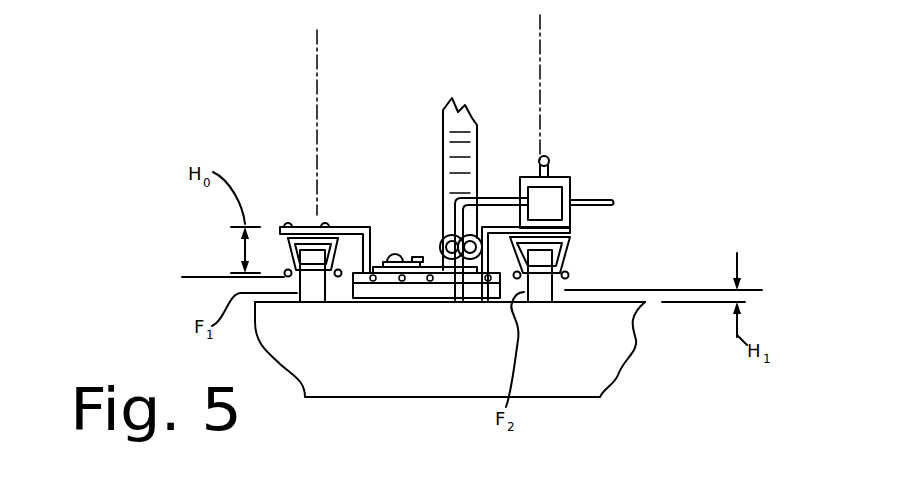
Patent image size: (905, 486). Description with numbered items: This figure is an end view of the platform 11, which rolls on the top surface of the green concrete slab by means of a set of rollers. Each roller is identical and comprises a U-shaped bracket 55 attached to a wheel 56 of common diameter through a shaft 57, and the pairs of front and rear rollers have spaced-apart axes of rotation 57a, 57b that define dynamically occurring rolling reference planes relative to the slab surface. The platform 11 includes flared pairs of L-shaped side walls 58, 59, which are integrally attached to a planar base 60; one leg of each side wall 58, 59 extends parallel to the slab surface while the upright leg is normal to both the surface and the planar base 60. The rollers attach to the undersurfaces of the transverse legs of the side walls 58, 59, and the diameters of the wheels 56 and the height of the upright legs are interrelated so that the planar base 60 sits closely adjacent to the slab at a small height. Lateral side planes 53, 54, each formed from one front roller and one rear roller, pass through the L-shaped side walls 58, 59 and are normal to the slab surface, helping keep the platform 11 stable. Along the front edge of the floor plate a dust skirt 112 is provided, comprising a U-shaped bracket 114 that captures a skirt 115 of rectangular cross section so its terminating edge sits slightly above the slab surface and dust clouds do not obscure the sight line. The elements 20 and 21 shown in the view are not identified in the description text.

The platform 11 is at (302, 152).
The valve block 20 is at (580, 173).
The control rod 21 is at (598, 196).
The lateral side plane 53 is at (317, 77).
The lateral side plane 54 is at (540, 78).
The U-shaped bracket 55 is at (573, 250).
The wheel 56 is at (541, 287).
The shaft 57 is at (568, 274).
The axis of rotation 57a is at (192, 277).
The axis of rotation 57b is at (208, 227).
The L-shaped side wall 58 is at (351, 216).
The L-shaped side wall 59 is at (498, 214).
The planar base 60 is at (378, 265).
The dust skirt 112 is at (427, 297).
The U-shaped bracket 114 is at (388, 284).
The skirt 115 is at (370, 294).